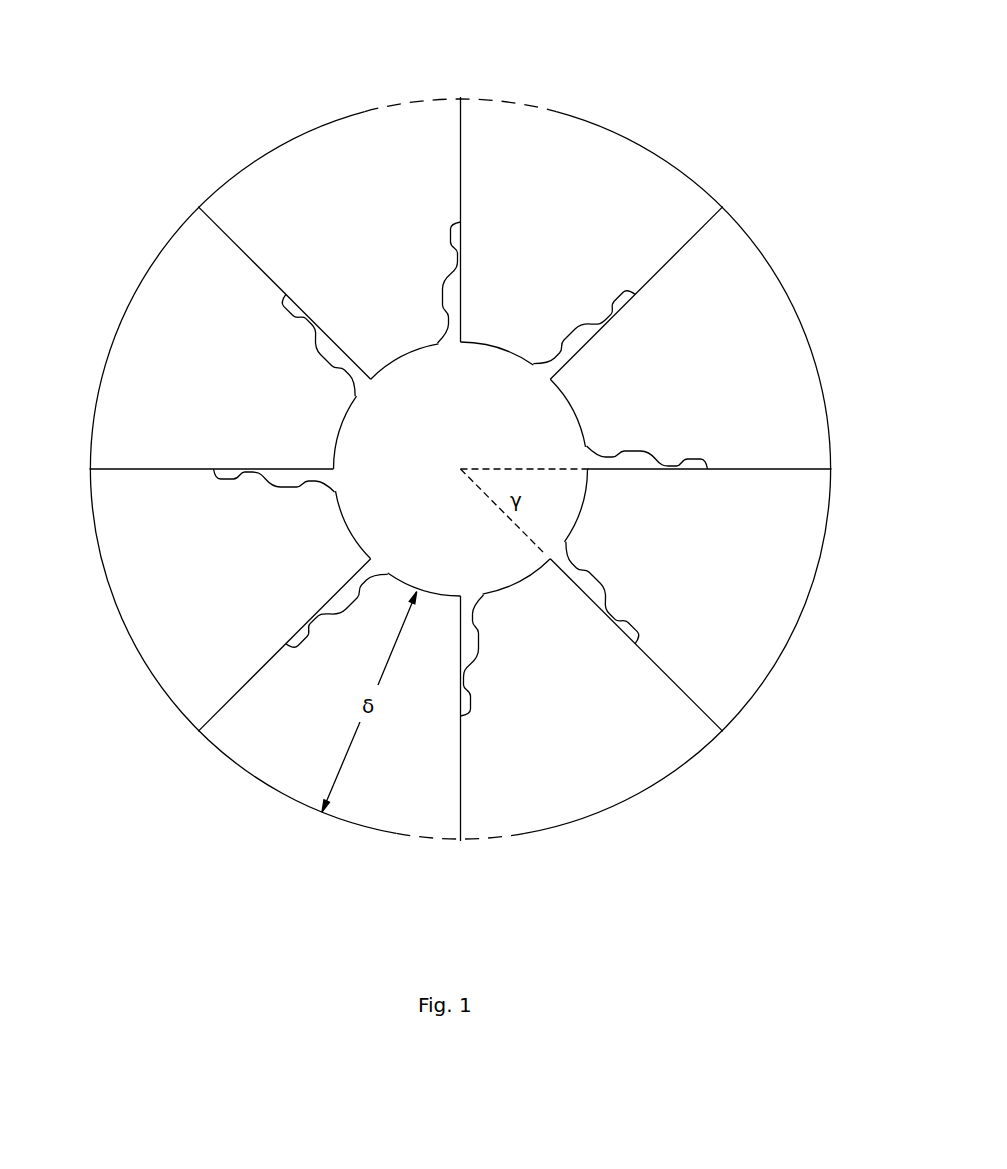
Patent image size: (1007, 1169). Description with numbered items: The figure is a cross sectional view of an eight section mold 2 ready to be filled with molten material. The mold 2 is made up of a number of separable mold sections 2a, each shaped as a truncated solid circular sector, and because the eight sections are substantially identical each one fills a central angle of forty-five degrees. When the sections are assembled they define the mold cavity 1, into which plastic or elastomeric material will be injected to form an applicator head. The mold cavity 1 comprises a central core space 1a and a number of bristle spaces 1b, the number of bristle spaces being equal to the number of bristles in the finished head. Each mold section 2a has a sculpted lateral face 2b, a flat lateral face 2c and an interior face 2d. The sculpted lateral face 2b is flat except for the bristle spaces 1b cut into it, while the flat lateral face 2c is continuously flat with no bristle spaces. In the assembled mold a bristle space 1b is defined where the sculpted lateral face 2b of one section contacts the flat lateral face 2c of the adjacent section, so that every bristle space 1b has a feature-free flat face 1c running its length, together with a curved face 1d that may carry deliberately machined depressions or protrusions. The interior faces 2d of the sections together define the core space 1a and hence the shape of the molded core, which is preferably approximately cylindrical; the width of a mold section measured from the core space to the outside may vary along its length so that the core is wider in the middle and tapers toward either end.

The mold cavity 1 is at (578, 425).
The core space 1a is at (480, 390).
The bristle space 1b is at (460, 223).
The flat face 1c is at (322, 325).
The curved face 1d is at (283, 310).
The mold 2 is at (247, 782).
The mold section 2a is at (568, 790).
The sculpted lateral face 2b is at (460, 757).
The flat lateral face 2c is at (457, 787).
The interior face 2d is at (343, 520).